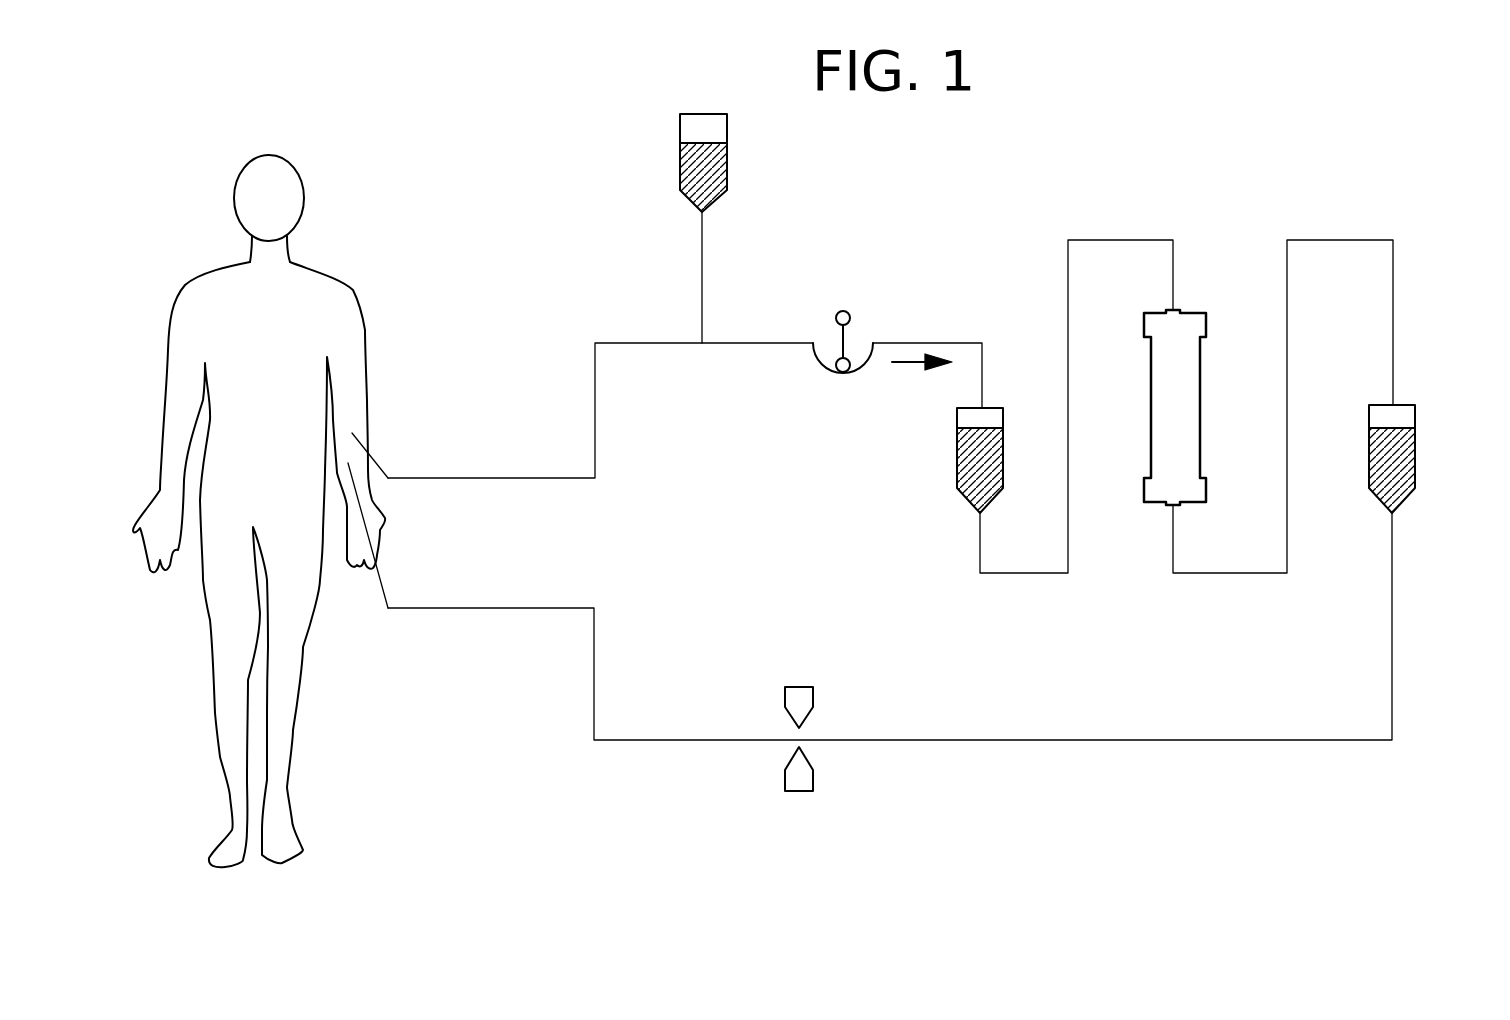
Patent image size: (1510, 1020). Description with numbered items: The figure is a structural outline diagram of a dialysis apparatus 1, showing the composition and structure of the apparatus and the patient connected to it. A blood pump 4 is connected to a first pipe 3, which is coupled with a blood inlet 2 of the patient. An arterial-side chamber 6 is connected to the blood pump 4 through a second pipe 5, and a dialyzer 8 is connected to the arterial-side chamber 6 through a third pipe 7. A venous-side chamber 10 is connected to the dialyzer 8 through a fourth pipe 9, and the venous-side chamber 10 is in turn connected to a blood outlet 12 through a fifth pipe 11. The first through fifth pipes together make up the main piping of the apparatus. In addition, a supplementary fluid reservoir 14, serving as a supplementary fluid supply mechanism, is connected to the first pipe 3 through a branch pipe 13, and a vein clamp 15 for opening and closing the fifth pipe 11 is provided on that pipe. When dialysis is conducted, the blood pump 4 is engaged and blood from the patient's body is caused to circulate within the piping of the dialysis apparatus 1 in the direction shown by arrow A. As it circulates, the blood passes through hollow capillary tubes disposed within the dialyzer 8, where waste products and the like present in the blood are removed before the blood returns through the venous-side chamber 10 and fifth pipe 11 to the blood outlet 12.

The dialysis apparatus 1 is at (978, 203).
The blood inlet 2 is at (366, 422).
The first pipe 3 is at (454, 477).
The blood pump 4 is at (856, 326).
The second pipe 5 is at (940, 343).
The arterial-side chamber 6 is at (957, 478).
The third pipe 7 is at (1068, 452).
The dialyzer 8 is at (1200, 445).
The fourth pipe 9 is at (1287, 423).
The venous-side chamber 10 is at (1415, 440).
The fifth pipe 11 is at (1045, 741).
The blood outlet 12 is at (368, 472).
The branch pipe 13 is at (702, 262).
The supplementary fluid reservoir 14 is at (727, 165).
The vein clamp 15 is at (783, 778).
The arrow A is at (912, 362).